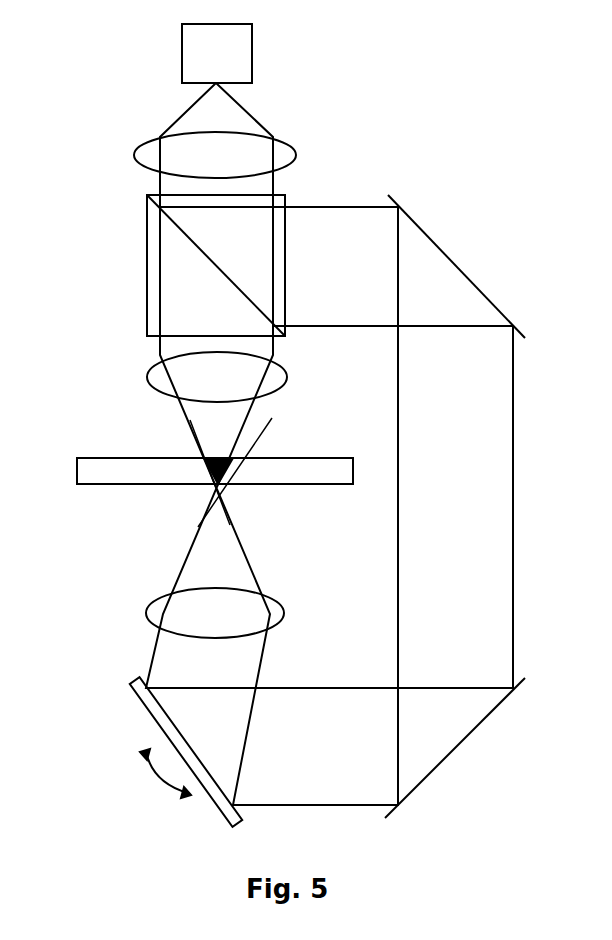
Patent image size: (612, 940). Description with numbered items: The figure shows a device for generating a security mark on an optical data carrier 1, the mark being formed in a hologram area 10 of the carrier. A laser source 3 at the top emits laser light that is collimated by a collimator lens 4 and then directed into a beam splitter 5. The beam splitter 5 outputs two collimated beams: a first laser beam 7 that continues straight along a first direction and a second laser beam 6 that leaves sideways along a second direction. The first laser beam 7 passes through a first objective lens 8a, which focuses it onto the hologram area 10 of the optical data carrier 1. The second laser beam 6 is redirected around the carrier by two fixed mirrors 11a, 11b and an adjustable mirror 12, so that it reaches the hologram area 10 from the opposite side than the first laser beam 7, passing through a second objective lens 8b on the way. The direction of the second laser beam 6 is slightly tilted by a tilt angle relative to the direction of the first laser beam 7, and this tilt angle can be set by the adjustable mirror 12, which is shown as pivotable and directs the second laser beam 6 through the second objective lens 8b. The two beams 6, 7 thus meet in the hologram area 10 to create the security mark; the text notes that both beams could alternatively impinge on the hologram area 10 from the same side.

The optical data carrier 1 is at (75, 470).
The laser source 3 is at (253, 58).
The collimator lens 4 is at (292, 140).
The beam splitter 5 is at (143, 242).
The second collimated laser beam 6 is at (340, 210).
The first collimated laser beam 7 is at (158, 353).
The first objective lens 8a is at (145, 372).
The second objective lens 8b is at (148, 615).
The hologram area 10 is at (160, 457).
The fixed mirror 11a is at (453, 258).
The fixed mirror 11b is at (458, 752).
The adjustable mirror 12 is at (140, 710).